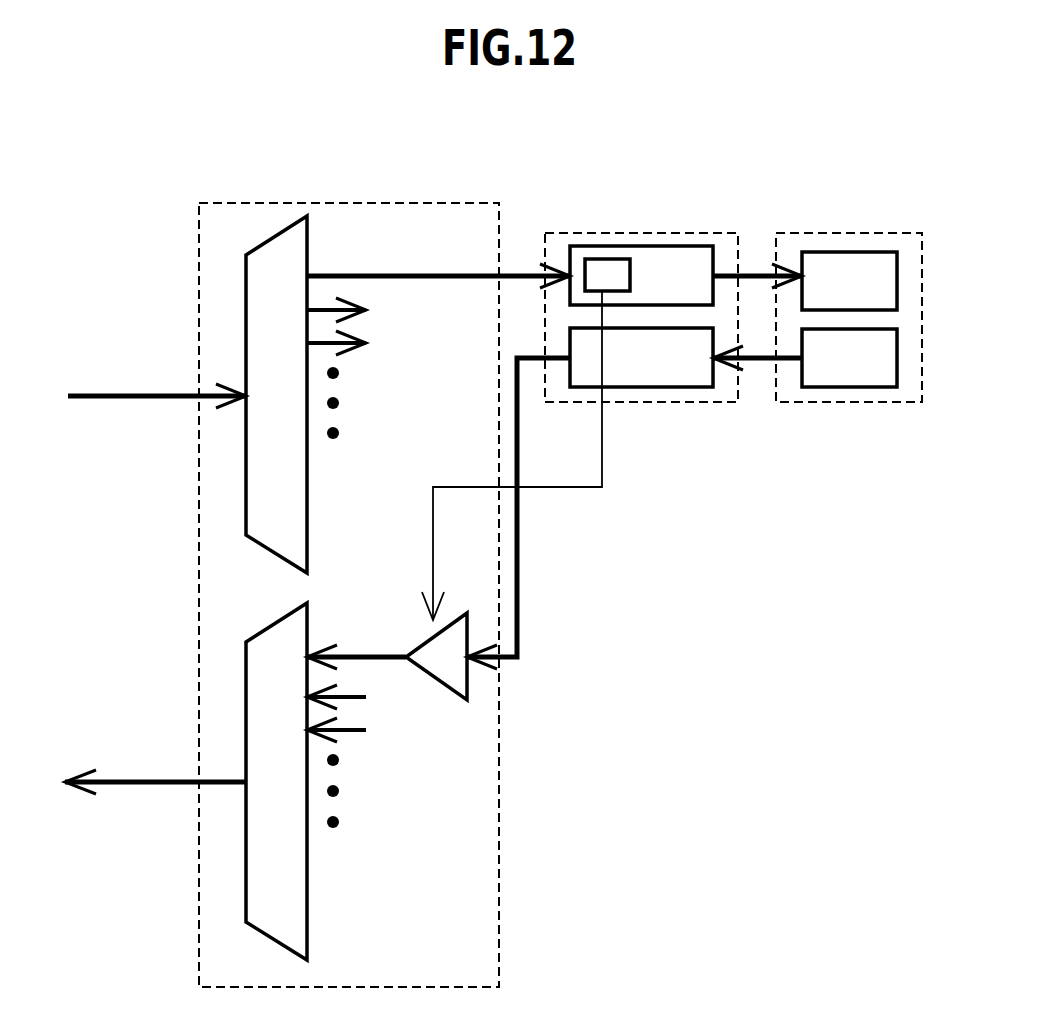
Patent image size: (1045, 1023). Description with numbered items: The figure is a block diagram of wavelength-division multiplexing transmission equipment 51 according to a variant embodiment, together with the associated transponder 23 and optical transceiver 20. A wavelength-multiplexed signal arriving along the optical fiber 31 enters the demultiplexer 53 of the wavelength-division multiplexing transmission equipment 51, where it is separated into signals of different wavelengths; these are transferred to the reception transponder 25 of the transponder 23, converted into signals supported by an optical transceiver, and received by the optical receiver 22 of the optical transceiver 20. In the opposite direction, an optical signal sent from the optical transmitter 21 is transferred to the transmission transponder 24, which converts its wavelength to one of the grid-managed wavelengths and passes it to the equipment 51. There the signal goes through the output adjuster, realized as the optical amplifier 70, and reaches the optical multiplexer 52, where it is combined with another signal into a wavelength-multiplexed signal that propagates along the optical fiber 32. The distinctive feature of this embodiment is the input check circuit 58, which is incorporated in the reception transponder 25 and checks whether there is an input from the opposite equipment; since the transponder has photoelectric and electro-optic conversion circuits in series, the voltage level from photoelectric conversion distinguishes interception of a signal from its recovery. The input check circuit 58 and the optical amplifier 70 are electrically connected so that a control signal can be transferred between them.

The optical transceiver 20 is at (855, 232).
The optical transmitter 21 is at (897, 360).
The optical receiver 22 is at (897, 278).
The transponder 23 is at (628, 232).
The transmission transponder 24 is at (695, 387).
The reception transponder 25 is at (675, 246).
The optical fiber 31 is at (125, 394).
The optical fiber 32 is at (120, 784).
The wavelength-division multiplexing transmission equipment 51 is at (499, 775).
The optical multiplexer 52 is at (246, 682).
The demultiplexer 53 is at (246, 472).
The input check circuit 58 is at (620, 291).
The optical amplifier 70 is at (466, 680).